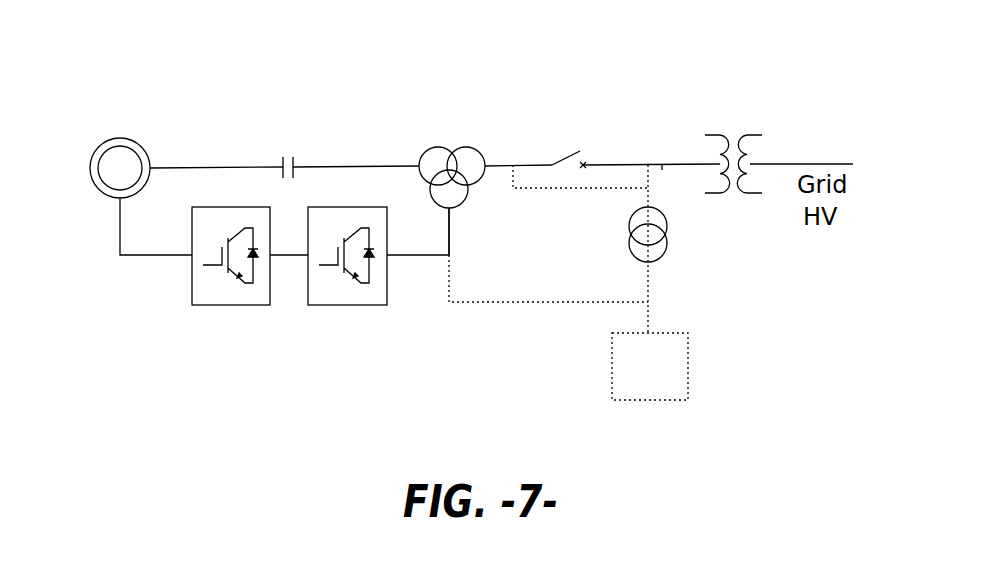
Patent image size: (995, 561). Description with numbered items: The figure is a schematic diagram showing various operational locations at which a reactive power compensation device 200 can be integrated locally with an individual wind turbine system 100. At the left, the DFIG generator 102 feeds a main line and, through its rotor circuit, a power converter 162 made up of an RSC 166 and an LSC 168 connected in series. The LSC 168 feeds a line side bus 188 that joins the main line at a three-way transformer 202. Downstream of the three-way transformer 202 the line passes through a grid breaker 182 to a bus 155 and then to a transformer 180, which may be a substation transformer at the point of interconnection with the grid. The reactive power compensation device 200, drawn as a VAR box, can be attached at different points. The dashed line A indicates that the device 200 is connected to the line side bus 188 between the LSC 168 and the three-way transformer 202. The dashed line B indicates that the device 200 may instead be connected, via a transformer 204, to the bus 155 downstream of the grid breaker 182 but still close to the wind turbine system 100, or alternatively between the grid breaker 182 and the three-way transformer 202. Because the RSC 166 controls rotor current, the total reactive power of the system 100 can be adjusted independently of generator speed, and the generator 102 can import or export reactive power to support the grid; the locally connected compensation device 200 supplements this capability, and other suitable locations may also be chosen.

The wind turbine power system 100 is at (356, 44).
The DFIG generator 102 is at (118, 138).
The power converter 162 is at (283, 291).
The RSC 166 is at (208, 305).
The LSC 168 is at (362, 305).
The line side bus 188 is at (449, 230).
The three-way transformer 202 is at (434, 146).
The grid breaker 182 is at (582, 143).
The bus 155 is at (662, 170).
The transformer 204 is at (667, 233).
The reactive power compensation device 200 is at (688, 357).
The substation transformer 180 is at (745, 133).
The dashed line A is at (502, 303).
The dashed line B is at (645, 290).